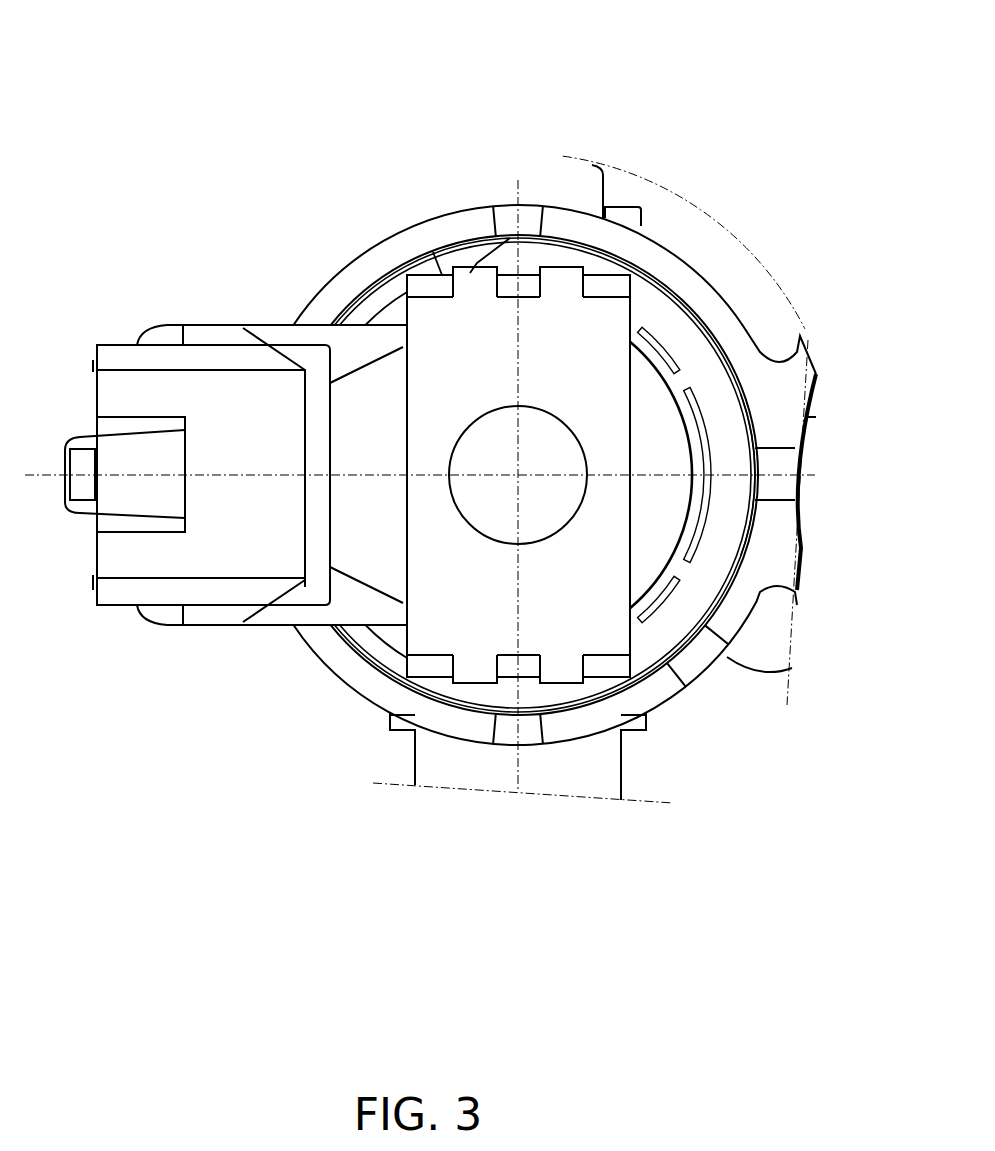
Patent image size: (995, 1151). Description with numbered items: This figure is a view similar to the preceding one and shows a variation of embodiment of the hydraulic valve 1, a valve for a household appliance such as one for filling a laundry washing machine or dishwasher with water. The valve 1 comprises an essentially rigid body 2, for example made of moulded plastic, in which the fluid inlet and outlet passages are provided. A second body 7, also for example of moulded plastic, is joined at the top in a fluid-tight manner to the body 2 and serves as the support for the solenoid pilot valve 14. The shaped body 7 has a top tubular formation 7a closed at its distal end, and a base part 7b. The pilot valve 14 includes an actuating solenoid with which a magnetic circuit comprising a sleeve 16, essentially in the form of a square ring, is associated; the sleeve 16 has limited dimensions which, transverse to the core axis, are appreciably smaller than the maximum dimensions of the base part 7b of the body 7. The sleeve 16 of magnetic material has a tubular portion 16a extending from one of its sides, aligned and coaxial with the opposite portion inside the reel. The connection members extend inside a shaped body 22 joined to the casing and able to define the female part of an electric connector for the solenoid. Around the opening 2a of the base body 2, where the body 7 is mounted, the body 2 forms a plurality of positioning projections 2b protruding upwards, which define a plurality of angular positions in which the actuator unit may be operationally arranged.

The hydraulic valve 1 is at (345, 185).
The body 2 is at (738, 303).
The opening 2a is at (737, 548).
The positioning projections 2b is at (537, 213).
The second body 7 is at (362, 287).
The top tubular formation 7a is at (468, 490).
The base part 7b is at (723, 413).
The solenoid pilot valve 14 is at (645, 313).
The sleeve 16 is at (633, 640).
The tubular portion 16a is at (560, 523).
The shaped body 22 is at (205, 385).